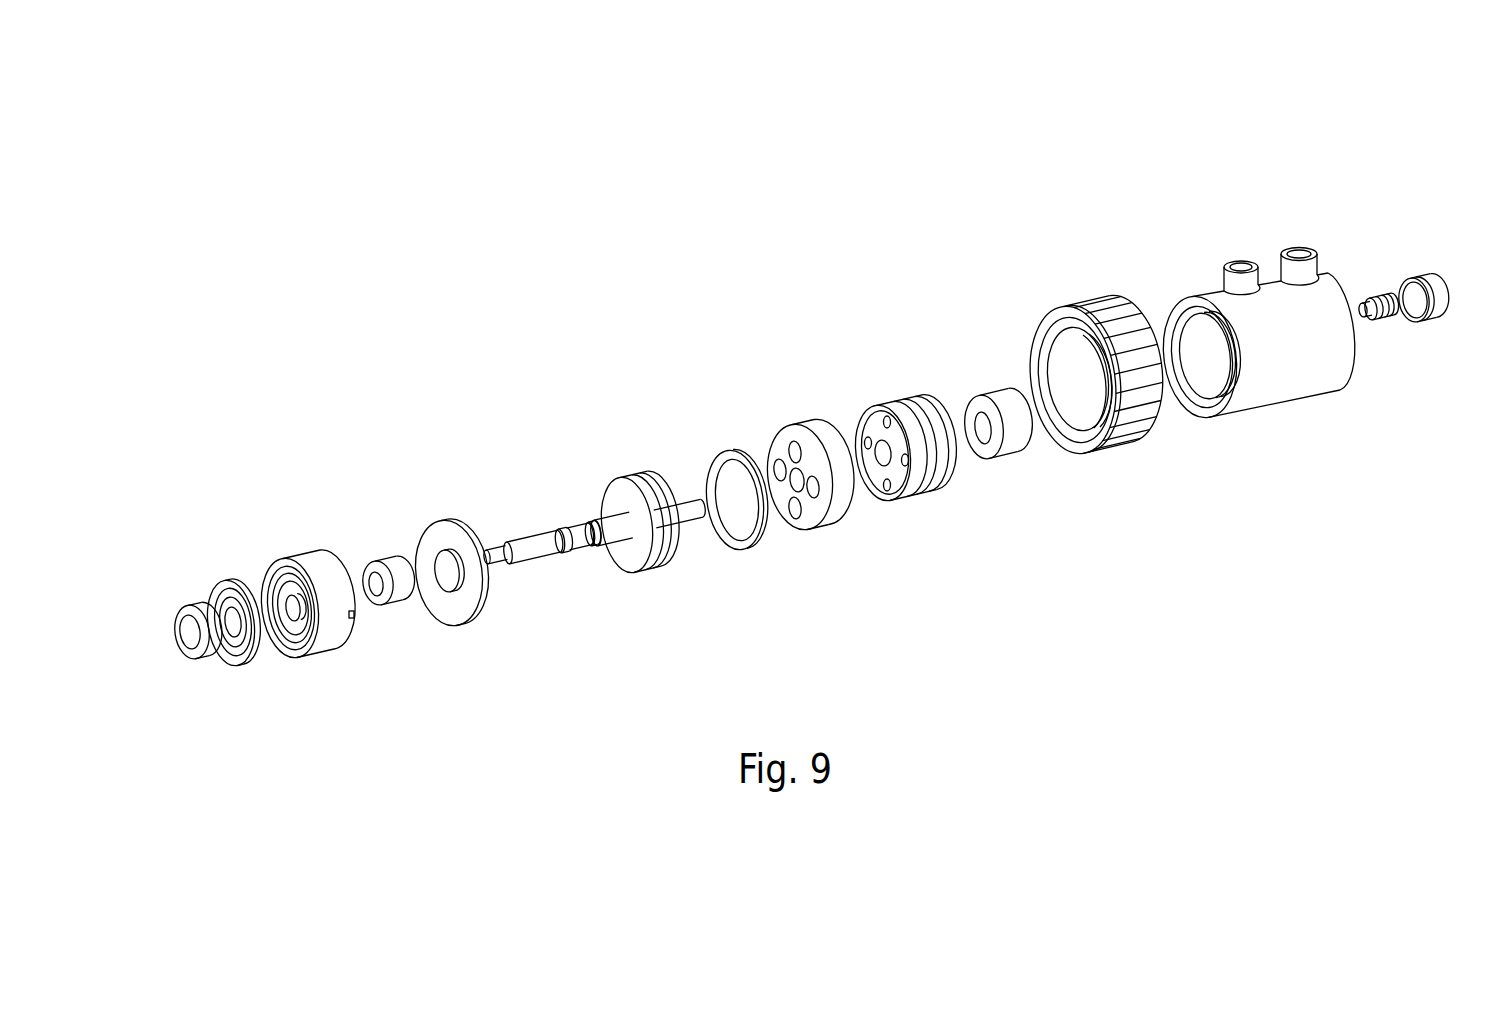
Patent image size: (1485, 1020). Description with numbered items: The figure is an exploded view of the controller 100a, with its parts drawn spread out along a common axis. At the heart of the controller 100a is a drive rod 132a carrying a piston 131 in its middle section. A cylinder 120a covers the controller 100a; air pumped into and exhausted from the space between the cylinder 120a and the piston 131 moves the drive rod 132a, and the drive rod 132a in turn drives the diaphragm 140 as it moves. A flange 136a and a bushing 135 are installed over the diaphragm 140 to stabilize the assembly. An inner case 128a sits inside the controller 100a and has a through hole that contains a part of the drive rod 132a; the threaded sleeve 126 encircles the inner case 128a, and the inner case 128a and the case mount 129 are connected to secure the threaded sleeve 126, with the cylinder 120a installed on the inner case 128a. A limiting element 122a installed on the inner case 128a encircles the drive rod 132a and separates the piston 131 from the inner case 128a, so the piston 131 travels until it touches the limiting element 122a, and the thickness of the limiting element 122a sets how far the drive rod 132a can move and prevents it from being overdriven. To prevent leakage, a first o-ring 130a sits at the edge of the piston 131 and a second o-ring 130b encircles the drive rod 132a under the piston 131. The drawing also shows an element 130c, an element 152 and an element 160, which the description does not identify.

The controller 100a is at (1358, 105).
The cylinder 120a is at (1195, 304).
The limiting element 122a is at (922, 361).
The threaded sleeve 126 is at (1049, 341).
The inner case 128a is at (835, 400).
The case mount 129 is at (760, 430).
The first o-ring 130a is at (668, 460).
The second o-ring 130b is at (520, 608).
The disc 130c is at (464, 546).
The piston 131 is at (594, 499).
The drive rod 132a is at (539, 483).
The bushing 135 is at (330, 529).
The flange 136a is at (261, 570).
The diaphragm 140 is at (189, 589).
The cap 152 is at (1375, 235).
The fitting 160 is at (1332, 251).